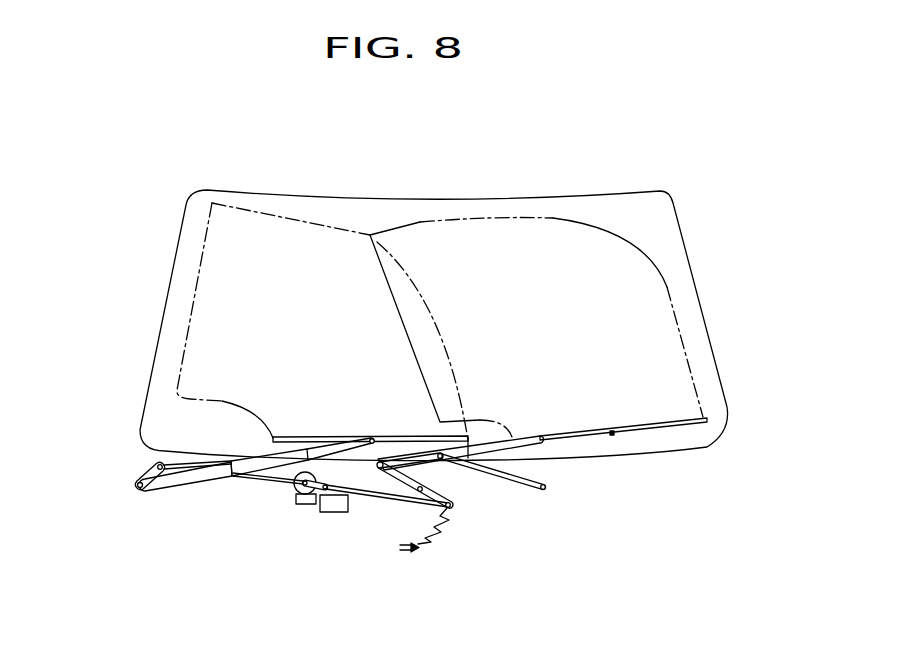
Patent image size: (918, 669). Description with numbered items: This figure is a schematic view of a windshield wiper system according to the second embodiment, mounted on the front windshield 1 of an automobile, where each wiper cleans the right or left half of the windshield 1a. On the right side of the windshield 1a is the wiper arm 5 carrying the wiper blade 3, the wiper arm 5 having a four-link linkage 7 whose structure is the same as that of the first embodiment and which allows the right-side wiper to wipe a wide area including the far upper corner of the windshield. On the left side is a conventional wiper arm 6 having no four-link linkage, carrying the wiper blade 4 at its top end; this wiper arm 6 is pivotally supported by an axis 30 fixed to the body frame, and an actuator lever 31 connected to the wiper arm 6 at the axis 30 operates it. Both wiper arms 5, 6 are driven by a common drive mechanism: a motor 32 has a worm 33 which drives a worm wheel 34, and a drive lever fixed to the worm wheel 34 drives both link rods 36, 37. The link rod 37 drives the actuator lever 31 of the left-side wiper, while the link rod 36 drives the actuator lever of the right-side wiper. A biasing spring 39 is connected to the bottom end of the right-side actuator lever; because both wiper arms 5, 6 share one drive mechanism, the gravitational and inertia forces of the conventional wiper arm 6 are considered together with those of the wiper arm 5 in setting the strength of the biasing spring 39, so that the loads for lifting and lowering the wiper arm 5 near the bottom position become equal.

The front windshield 1 is at (179, 214).
The windshield 1a is at (682, 226).
The wiper blade 3 is at (645, 426).
The wiper blade 4 is at (390, 437).
The wiper arm 5 is at (530, 437).
The wiper arm 6 is at (248, 459).
The four-link linkage 7 is at (455, 483).
The axis 30 is at (140, 491).
The actuator lever 31 is at (143, 471).
The motor 32 is at (340, 513).
The worm 33 is at (303, 505).
The worm wheel 34 is at (296, 490).
The link rod 36 is at (375, 500).
The link rod 37 is at (243, 483).
The biasing spring 39 is at (437, 534).